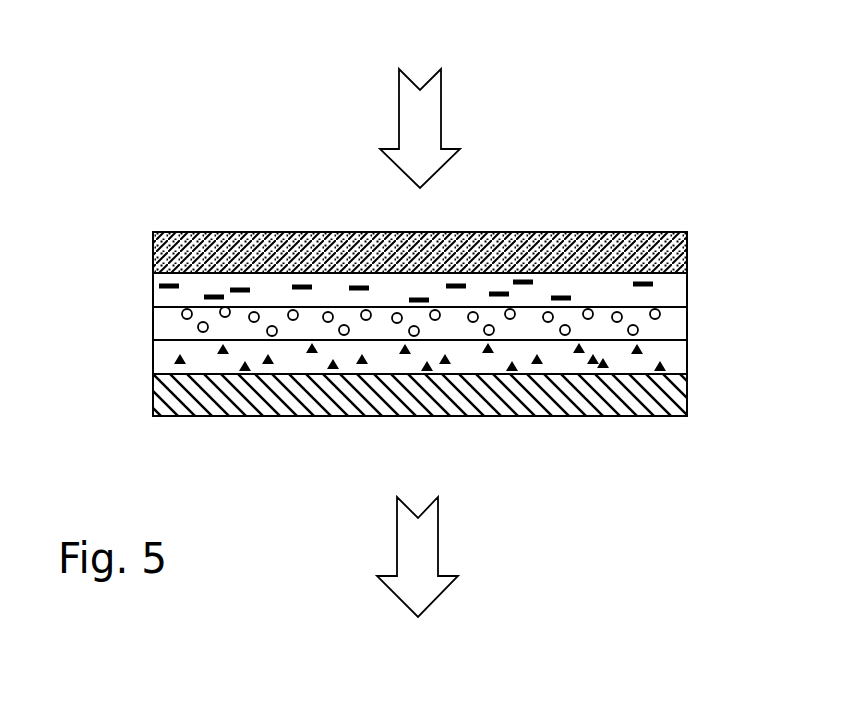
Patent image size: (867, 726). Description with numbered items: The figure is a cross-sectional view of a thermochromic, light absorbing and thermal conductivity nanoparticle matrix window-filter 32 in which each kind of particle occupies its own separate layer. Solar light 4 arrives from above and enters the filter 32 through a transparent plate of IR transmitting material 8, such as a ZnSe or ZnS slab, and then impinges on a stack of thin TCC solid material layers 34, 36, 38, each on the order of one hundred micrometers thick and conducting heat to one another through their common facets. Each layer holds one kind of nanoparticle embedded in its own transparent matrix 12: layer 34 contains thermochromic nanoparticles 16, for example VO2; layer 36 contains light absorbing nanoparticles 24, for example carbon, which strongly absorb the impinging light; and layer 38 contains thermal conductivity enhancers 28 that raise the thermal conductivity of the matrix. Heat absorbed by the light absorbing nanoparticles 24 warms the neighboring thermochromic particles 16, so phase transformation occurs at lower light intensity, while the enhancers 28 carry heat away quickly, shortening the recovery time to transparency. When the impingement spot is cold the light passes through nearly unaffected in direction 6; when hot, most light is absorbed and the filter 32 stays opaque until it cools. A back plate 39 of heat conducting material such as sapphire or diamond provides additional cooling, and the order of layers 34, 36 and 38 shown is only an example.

The solar light 4 is at (420, 128).
The direction 6 is at (417, 557).
The transparent plate of IR transmitting material 8 is at (153, 248).
The transparent matrix 12 is at (162, 323).
The thermochromic nanoparticles 16 is at (588, 313).
The light absorbing nanoparticles 24 is at (232, 292).
The thermal conductivity enhancers 28 is at (489, 348).
The window-filter 32 is at (710, 143).
The thermochromic layer 34 is at (537, 330).
The light absorbing layer 36 is at (677, 291).
The thermal conductivity enhancing layer 38 is at (163, 360).
The back plate 39 is at (162, 408).